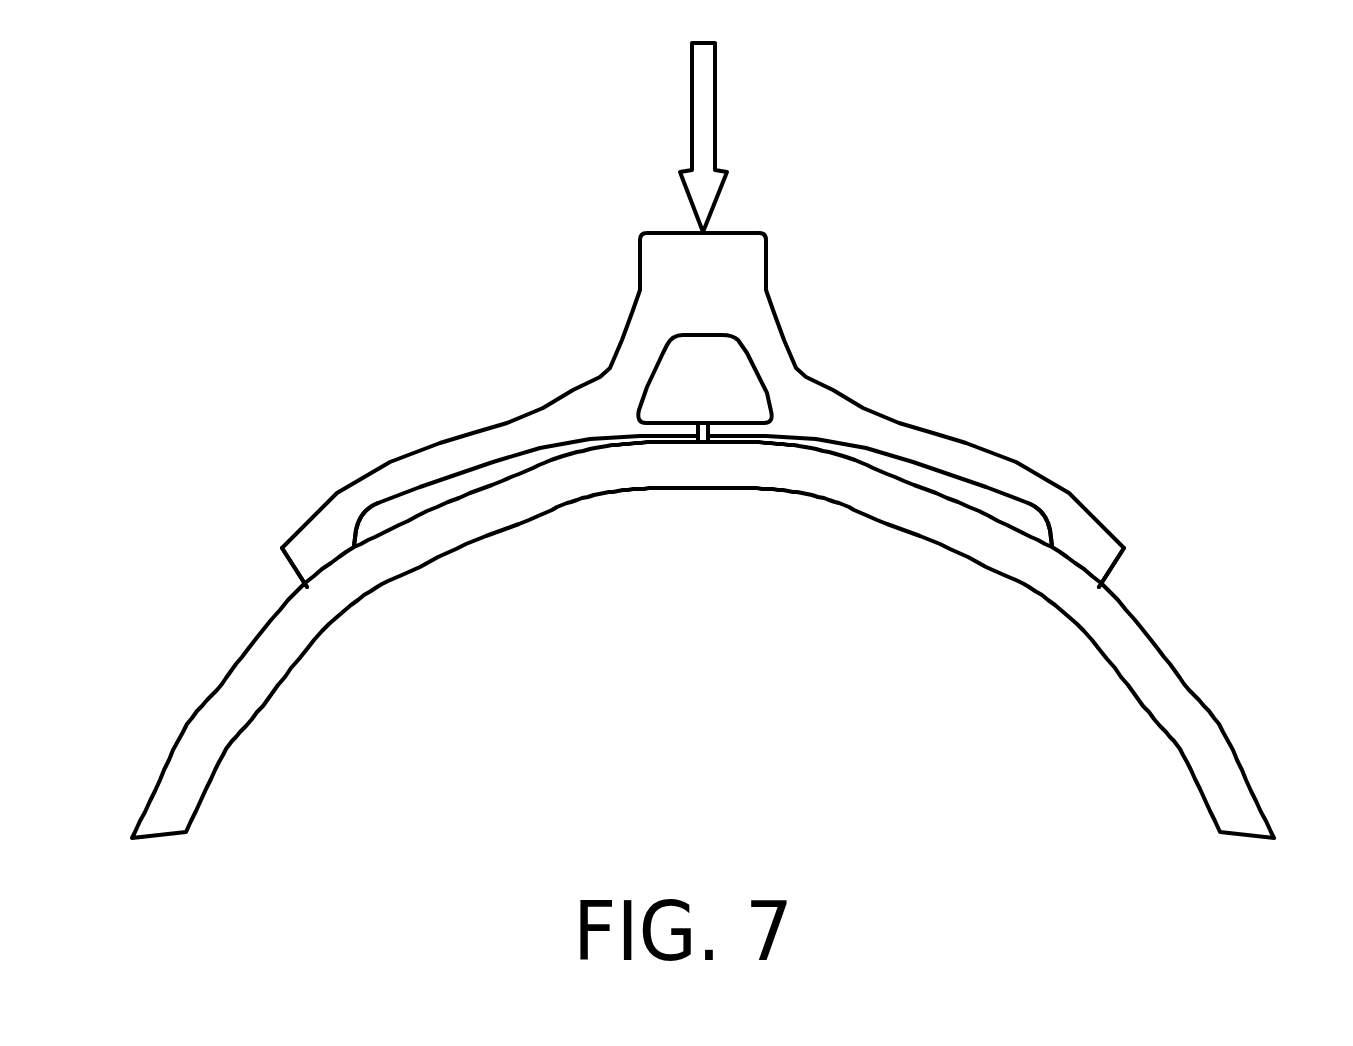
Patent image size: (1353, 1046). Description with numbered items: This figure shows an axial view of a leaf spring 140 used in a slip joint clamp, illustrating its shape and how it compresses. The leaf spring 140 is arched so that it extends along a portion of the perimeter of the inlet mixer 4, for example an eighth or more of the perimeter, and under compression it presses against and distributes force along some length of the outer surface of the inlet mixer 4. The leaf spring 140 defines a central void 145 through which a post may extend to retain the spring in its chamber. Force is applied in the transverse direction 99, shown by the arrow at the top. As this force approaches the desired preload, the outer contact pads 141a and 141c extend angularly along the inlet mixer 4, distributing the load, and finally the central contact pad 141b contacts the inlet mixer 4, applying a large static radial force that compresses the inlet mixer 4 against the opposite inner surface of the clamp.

The inlet mixer 4 is at (1187, 725).
The transverse direction 99 is at (715, 140).
The leaf spring 140 is at (437, 462).
The outer contact pad 141a is at (323, 560).
The central contact pad 141b is at (718, 428).
The outer contact pad 141c is at (1078, 552).
The central void 145 is at (712, 390).